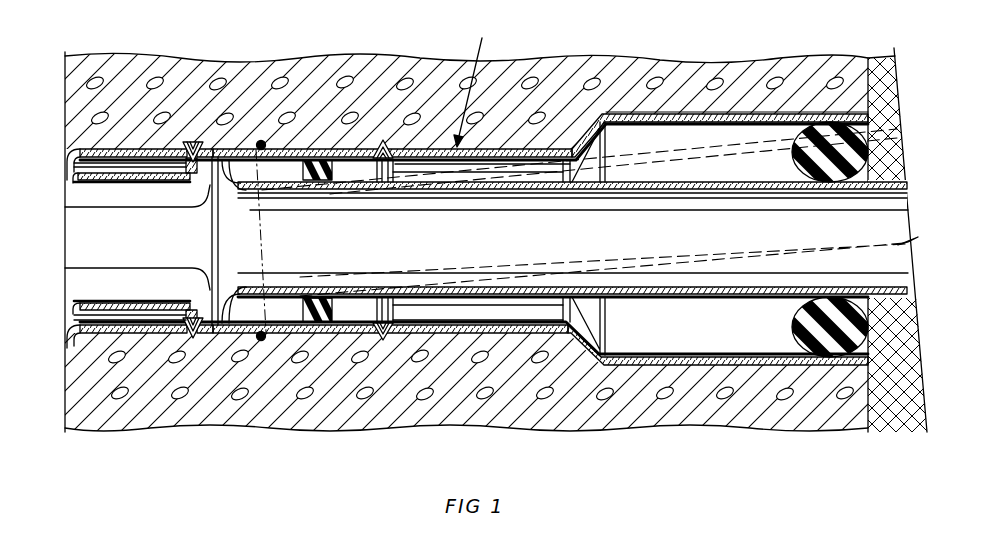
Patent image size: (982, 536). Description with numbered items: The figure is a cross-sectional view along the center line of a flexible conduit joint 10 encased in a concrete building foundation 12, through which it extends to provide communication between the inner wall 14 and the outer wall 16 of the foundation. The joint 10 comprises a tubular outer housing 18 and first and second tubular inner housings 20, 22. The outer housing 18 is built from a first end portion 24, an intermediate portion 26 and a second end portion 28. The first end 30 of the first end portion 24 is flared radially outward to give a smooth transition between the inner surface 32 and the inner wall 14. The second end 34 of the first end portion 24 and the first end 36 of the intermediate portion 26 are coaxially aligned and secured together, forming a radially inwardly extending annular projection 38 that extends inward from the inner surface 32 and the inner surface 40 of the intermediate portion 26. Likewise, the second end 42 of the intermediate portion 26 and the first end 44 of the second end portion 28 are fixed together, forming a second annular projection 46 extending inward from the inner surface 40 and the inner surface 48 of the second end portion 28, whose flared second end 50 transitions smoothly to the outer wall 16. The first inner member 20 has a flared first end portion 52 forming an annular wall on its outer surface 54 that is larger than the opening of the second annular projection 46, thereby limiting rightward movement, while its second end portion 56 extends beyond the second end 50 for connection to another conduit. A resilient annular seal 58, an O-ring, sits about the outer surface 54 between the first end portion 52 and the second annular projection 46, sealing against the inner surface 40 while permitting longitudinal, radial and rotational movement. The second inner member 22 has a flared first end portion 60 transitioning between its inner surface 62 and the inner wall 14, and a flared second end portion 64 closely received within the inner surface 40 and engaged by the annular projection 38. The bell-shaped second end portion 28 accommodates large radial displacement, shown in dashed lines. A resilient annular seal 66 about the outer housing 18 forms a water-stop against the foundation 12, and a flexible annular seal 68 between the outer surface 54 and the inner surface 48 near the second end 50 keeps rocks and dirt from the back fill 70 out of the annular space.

The flexible conduit joint 10 is at (63, 179).
The concrete building foundation 12 is at (585, 70).
The inner wall 14 is at (63, 112).
The outer wall 16 is at (887, 58).
The tubular outer housing 18 is at (478, 82).
The first tubular inner housing 20 is at (680, 271).
The second tubular inner housing 22 is at (77, 181).
The first end portion 24 is at (157, 150).
The intermediate portion 26 is at (323, 150).
The second end portion 28 is at (627, 120).
The first end 30 is at (65, 331).
The inner surface 32 is at (143, 298).
The second end 34 is at (188, 146).
The first end 36 is at (208, 148).
The annular projection 38 is at (193, 182).
The inner surface 40 is at (378, 303).
The second end 42 is at (383, 140).
The first end 44 is at (392, 150).
The second annular projection 46 is at (377, 173).
The inner surface 48 is at (470, 320).
The second end 50 is at (863, 352).
The flared first end portion 52 is at (226, 172).
The outer surface 54 is at (667, 181).
The second end portion 56 is at (891, 193).
The resilient annular seal 58 is at (299, 162).
The flared first end portion 60 is at (71, 306).
The inner surface 62 is at (102, 303).
The second end portion 64 is at (200, 305).
The resilient annular seal 66 is at (266, 145).
The flexible annular seal 68 is at (793, 160).
The back fill 70 is at (892, 84).